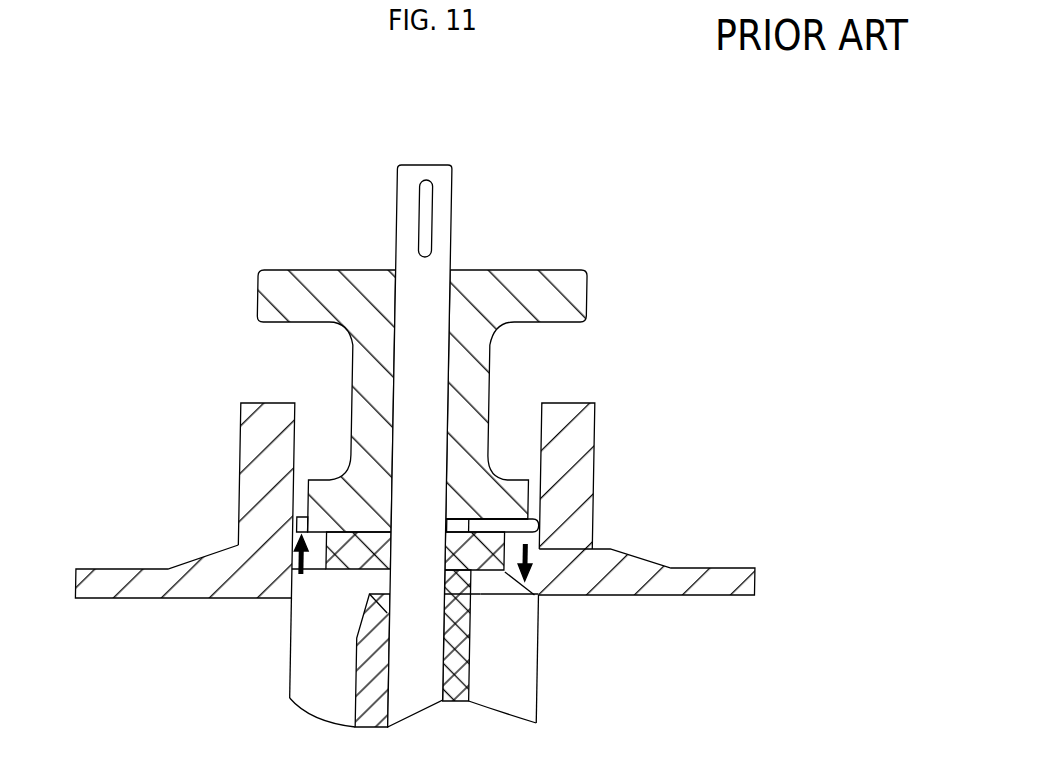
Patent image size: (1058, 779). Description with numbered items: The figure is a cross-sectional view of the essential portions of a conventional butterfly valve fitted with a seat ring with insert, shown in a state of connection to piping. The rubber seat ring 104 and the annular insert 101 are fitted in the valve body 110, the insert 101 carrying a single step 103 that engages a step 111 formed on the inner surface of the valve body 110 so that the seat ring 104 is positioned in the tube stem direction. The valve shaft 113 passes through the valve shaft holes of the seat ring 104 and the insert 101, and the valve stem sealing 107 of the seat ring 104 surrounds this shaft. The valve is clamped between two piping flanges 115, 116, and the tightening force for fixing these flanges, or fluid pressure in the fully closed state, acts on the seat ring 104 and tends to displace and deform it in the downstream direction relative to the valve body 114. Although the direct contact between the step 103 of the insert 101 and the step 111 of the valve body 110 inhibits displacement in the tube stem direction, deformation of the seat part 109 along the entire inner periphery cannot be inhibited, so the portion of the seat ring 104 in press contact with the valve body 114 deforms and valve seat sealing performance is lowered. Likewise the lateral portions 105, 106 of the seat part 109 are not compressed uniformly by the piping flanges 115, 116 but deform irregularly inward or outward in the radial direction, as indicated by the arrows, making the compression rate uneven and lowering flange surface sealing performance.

The insert 101 is at (373, 593).
The step 103 is at (543, 528).
The seat ring 104 is at (540, 596).
The lateral portion 105 is at (628, 518).
The lateral portion 106 is at (292, 562).
The valve stem sealing 107 is at (468, 678).
The seat part 109 is at (365, 593).
The valve body 110 is at (270, 297).
The step 111 is at (448, 523).
The valve shaft 113 is at (443, 226).
The valve body 114 is at (360, 677).
The piping flange 115 is at (573, 458).
The piping flange 116 is at (240, 404).